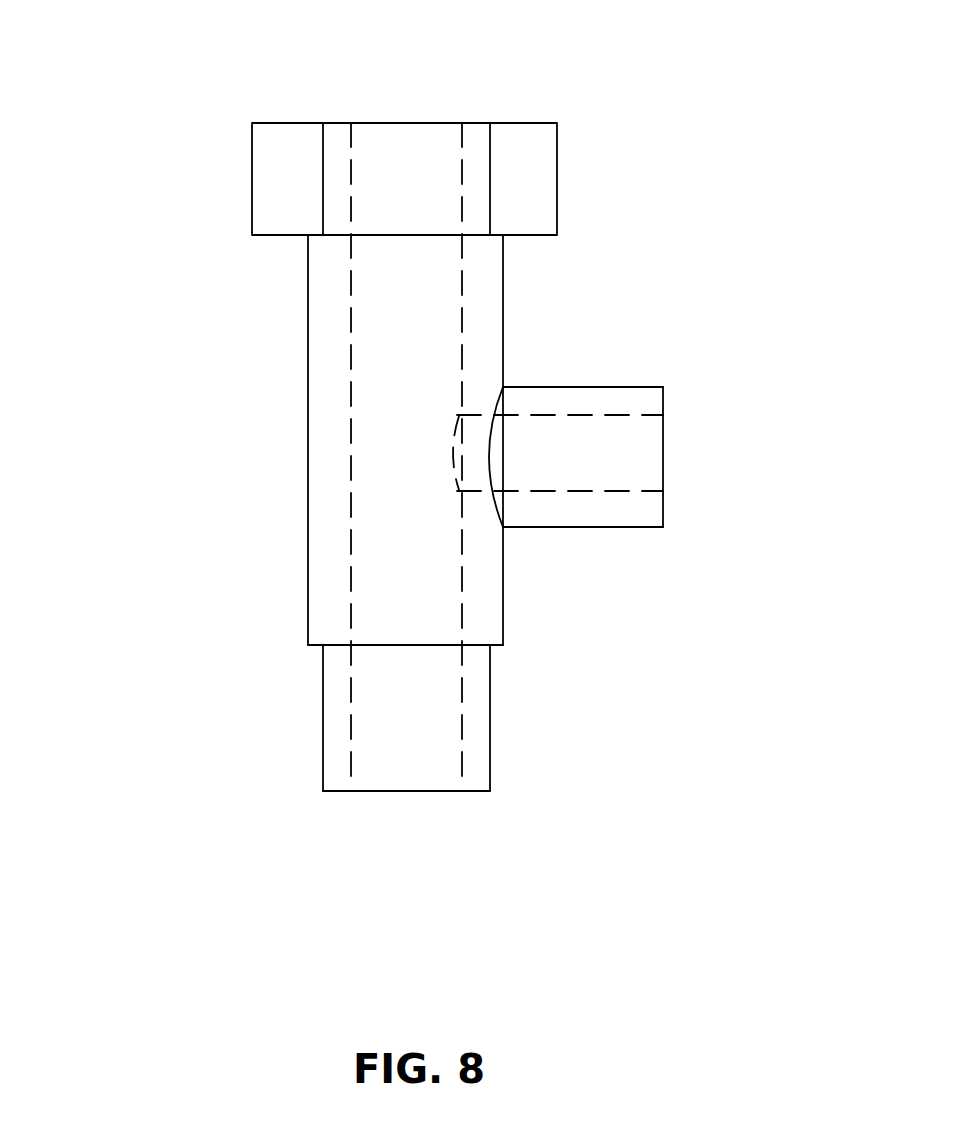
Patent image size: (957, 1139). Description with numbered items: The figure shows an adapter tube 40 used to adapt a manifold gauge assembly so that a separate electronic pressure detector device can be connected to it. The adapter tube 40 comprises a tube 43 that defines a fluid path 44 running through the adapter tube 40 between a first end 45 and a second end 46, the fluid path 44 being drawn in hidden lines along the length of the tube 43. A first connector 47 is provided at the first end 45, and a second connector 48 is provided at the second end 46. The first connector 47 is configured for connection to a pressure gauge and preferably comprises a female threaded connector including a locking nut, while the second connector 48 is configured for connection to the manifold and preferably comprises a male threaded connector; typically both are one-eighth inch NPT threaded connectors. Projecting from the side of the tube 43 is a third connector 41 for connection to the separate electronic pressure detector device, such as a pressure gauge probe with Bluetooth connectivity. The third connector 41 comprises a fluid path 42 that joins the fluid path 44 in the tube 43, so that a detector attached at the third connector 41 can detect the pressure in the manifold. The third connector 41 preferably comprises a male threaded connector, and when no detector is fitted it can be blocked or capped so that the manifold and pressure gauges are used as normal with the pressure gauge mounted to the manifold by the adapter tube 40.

The adapter tube 40 is at (160, 100).
The third connector 41 is at (635, 517).
The fluid path 42 is at (598, 453).
The tube 43 is at (323, 403).
The fluid path 44 is at (351, 331).
The first end 45 is at (435, 122).
The second end 46 is at (382, 792).
The first connector 47 is at (537, 180).
The second connector 48 is at (482, 746).